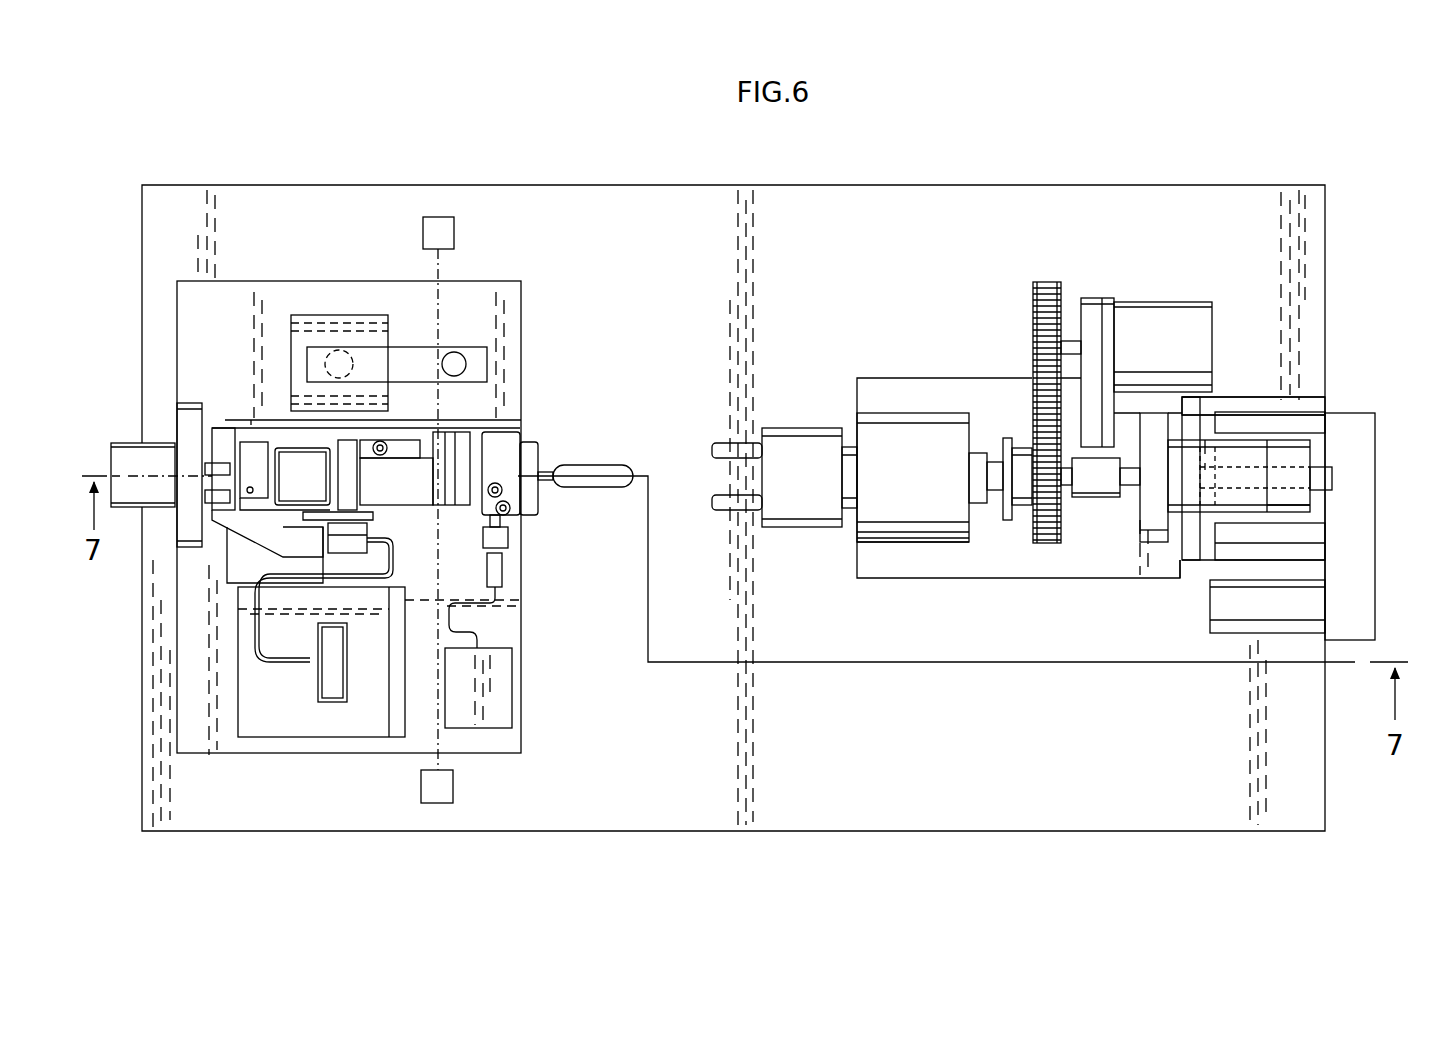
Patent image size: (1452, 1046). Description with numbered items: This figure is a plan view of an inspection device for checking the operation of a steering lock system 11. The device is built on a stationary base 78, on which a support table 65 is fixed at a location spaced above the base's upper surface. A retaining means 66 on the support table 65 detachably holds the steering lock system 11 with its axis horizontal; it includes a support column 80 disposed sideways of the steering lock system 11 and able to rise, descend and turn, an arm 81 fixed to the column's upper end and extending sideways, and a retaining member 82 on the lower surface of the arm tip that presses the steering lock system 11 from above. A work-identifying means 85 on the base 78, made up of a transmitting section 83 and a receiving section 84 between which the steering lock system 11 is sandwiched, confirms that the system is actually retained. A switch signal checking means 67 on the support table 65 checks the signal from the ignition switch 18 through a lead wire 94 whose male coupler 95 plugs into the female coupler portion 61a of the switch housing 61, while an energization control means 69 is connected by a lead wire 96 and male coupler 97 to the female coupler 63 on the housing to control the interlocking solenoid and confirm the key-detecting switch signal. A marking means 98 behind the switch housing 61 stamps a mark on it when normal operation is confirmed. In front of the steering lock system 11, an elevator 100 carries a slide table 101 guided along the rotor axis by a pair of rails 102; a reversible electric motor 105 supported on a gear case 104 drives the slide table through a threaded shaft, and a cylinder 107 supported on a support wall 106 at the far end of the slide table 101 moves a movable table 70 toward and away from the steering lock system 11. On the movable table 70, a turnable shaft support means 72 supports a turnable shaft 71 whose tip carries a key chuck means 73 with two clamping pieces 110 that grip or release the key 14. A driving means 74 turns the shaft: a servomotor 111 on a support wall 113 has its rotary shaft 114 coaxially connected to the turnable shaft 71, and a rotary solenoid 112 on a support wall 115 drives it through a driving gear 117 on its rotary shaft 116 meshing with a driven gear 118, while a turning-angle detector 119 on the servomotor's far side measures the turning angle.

The steering lock system 11 is at (462, 412).
The key 14 is at (596, 483).
The ignition switch 18 is at (225, 418).
The switch housing 61 is at (240, 525).
The female coupler portion 61a is at (302, 547).
The female coupler 63 is at (498, 541).
The support table 65 is at (480, 292).
The retaining means 66 is at (365, 313).
The switch signal checking means 67 is at (305, 728).
The energization control means 69 is at (503, 697).
The movable table 70 is at (878, 393).
The turnable shaft 71 is at (850, 453).
The turnable shaft support means 72 is at (898, 527).
The key chuck means 73 is at (758, 436).
The driving means 74 is at (1216, 300).
The stationary base 78 is at (905, 745).
The support column 80 is at (327, 352).
The arm 81 is at (415, 360).
The retaining member 82 is at (465, 370).
The transmitting section 83 is at (445, 786).
The receiving section 84 is at (454, 238).
The work-identifying means 85 is at (415, 790).
The lead wire 94 is at (283, 665).
The male coupler 95 is at (348, 548).
The lead wire 96 is at (476, 637).
The male coupler 97 is at (500, 572).
The marking means 98 is at (125, 440).
The elevator 100 is at (1232, 405).
The slide table 101 is at (1190, 560).
The guide rails 102 is at (1290, 420).
The gear case 104 is at (1358, 563).
The electric motor 105 is at (1230, 617).
The support wall 106 is at (1202, 397).
The cylinder 107 is at (1332, 478).
The clamping pieces 110 is at (720, 450).
The servomotor 111 is at (1180, 490).
The rotary solenoid 112 is at (1153, 330).
The support wall 113 is at (1160, 540).
The rotary shaft 114 is at (1110, 498).
The support wall 115 is at (1102, 310).
The rotary shaft 116 is at (1068, 343).
The driving gear 117 is at (1040, 320).
The driven gear 118 is at (1030, 430).
The turning-angle detector 119 is at (1297, 498).